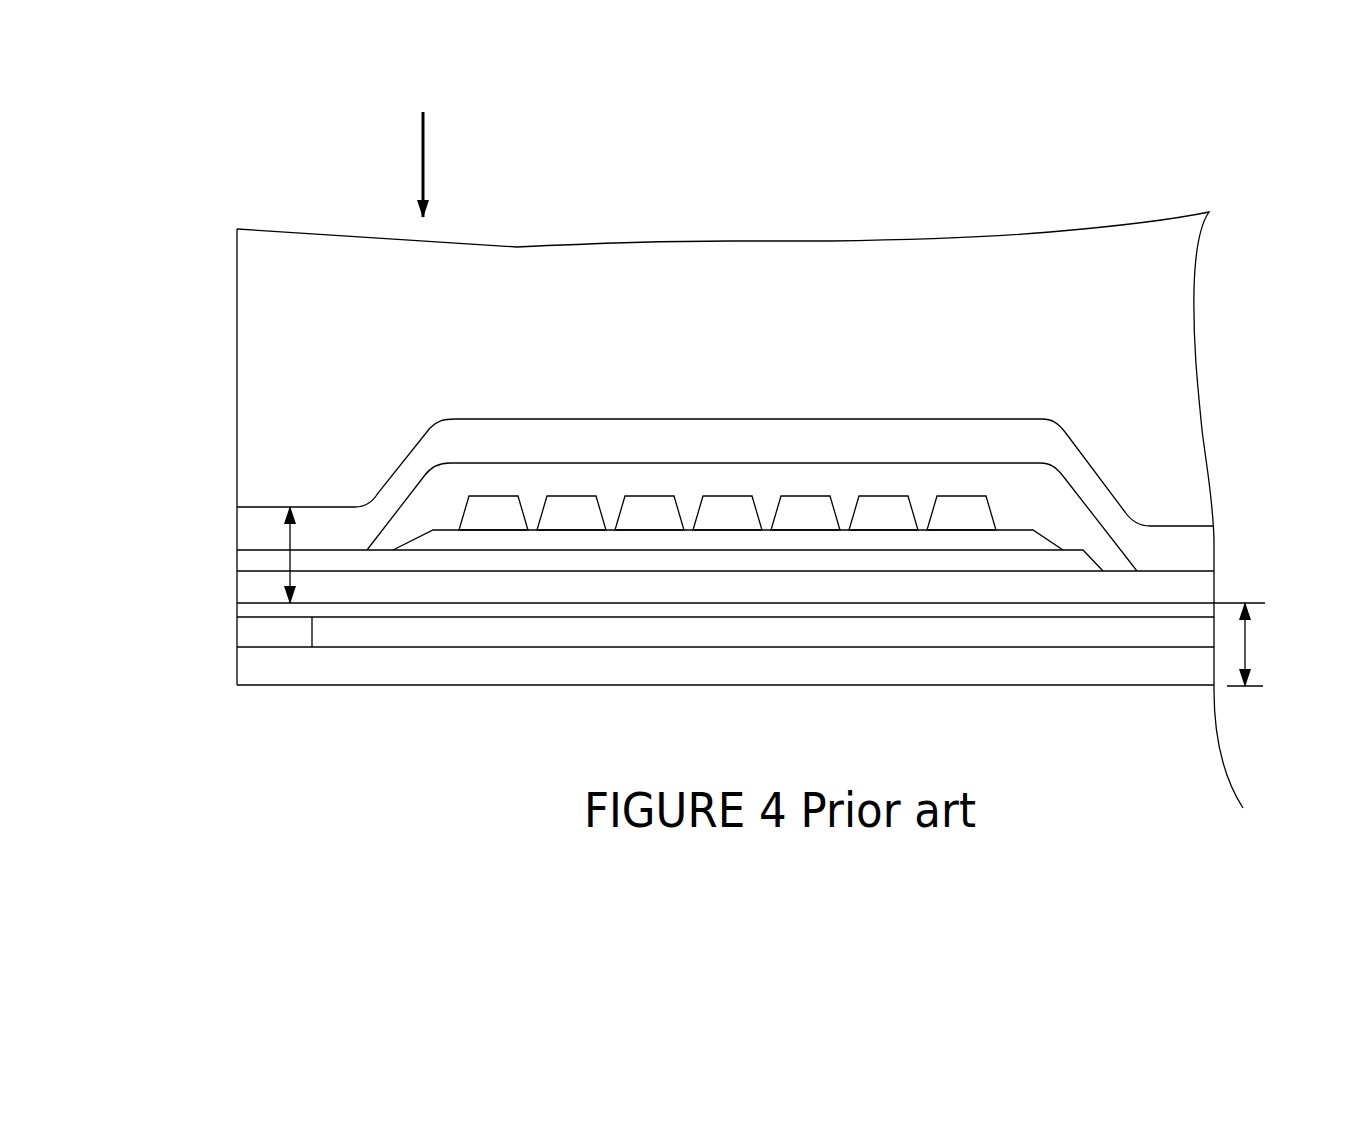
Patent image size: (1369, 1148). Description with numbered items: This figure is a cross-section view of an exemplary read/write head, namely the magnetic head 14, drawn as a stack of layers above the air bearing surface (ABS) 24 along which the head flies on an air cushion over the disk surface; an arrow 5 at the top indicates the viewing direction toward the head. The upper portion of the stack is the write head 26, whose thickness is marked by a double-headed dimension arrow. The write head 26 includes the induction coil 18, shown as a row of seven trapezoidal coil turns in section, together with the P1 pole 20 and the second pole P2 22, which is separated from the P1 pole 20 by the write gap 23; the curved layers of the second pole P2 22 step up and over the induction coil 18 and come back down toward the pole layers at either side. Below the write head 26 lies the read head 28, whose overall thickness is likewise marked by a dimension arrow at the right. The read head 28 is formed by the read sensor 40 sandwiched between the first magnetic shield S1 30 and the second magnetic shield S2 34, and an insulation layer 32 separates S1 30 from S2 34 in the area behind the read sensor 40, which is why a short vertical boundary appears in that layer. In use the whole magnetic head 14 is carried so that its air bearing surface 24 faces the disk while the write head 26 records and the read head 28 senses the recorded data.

The magnetic head 14 is at (200, 262).
The light incidence direction 5 is at (442, 164).
The air bearing surface 24 is at (235, 330).
The second pole P2 22 is at (257, 525).
The write gap 23 is at (237, 563).
The induction coil 18 is at (560, 508).
The write head 26 is at (293, 537).
The P1 pole 20 is at (237, 582).
The second magnetic shield S2 34 is at (247, 609).
The read sensor 40 is at (247, 630).
The first magnetic shield S1 30 is at (238, 648).
The insulation layer 32 is at (438, 630).
The read head 28 is at (1253, 668).